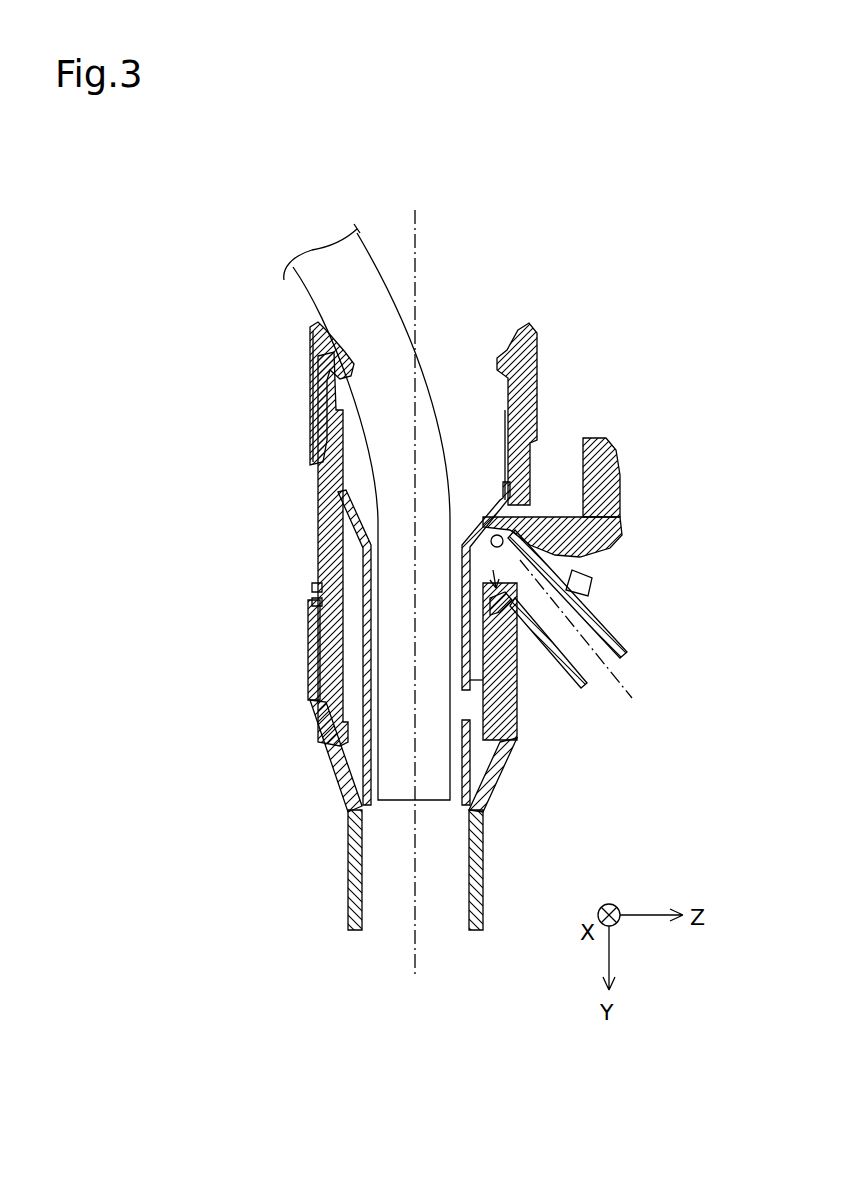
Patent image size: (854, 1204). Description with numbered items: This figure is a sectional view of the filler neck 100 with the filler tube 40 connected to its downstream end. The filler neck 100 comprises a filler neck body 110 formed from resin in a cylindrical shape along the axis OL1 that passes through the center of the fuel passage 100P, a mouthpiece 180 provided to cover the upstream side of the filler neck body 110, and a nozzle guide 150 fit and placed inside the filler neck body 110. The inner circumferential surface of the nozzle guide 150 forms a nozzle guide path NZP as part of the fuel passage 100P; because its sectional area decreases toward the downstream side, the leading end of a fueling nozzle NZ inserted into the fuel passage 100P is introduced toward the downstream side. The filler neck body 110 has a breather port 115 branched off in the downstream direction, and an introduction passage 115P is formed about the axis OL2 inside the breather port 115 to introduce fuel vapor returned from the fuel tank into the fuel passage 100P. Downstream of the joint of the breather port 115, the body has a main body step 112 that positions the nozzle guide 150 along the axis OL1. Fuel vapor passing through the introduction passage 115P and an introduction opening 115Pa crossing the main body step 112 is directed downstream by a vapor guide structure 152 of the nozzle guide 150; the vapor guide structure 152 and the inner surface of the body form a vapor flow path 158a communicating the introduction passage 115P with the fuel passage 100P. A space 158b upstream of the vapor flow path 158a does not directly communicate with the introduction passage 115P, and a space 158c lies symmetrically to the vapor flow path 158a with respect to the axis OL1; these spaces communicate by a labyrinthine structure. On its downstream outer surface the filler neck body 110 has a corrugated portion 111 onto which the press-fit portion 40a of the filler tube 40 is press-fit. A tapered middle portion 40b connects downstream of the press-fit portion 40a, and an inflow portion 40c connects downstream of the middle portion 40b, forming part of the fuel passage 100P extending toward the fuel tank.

The axis OL1 is at (412, 579).
The fueling nozzle NZ is at (288, 273).
The nozzle guide path NZP is at (466, 476).
The fuel passage 100P is at (447, 279).
The filler neck 100 is at (212, 432).
The mouthpiece 180 is at (316, 428).
The filler neck body 110 is at (320, 497).
The space 158c is at (337, 546).
The nozzle guide 150 is at (364, 553).
The space 158b is at (528, 517).
The vapor guide structure 152 is at (530, 510).
The main body step 112 is at (492, 558).
The introduction opening 115Pa is at (483, 521).
The breather port 115 is at (598, 613).
The axis OL2 is at (597, 652).
The introduction passage 115P is at (620, 653).
The vapor flow path 158a is at (516, 604).
The filler tube 40 is at (128, 672).
The press-fit portion 40a is at (318, 656).
The corrugated portion 111 is at (318, 698).
The middle portion 40b is at (328, 764).
The inflow portion 40c is at (350, 920).